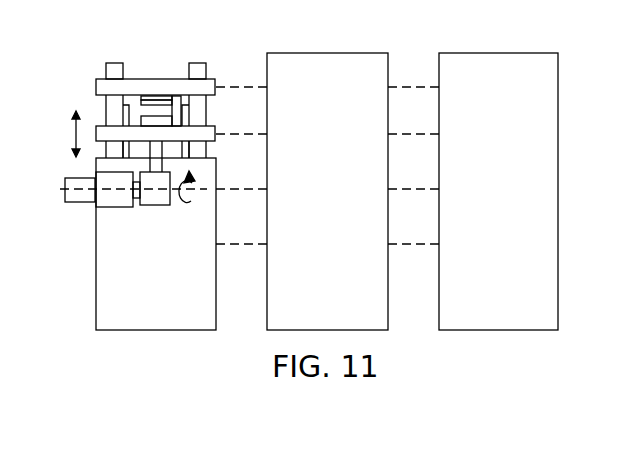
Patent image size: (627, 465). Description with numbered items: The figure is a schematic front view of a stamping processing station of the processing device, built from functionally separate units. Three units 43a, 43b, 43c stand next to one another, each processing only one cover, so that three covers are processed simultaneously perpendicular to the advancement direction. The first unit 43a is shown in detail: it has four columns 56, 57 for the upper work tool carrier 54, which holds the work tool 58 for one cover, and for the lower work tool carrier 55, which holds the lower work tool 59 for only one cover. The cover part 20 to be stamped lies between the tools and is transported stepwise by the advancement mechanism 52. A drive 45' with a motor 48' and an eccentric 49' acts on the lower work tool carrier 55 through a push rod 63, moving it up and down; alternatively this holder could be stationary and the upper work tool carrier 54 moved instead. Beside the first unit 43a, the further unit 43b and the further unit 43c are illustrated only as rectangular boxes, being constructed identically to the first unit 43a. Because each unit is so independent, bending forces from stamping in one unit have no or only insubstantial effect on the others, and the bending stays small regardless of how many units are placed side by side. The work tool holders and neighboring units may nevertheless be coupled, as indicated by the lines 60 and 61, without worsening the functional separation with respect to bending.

The first unit 43a is at (112, 293).
The further unit 43b is at (335, 68).
The further unit 43c is at (523, 67).
The lines 60 is at (239, 85).
The connection line 61 is at (411, 87).
The upper work tool carrier 54 is at (99, 87).
The lower work tool carrier 55 is at (101, 134).
The column 56 is at (112, 67).
The column 57 is at (196, 65).
The advancement mechanism 52 is at (173, 152).
The work tool 58 is at (153, 95).
The cover part 20 is at (147, 100).
The lower work tool 59 is at (165, 121).
The push rod 63 is at (150, 168).
The motor 48' is at (71, 210).
The drive 45' is at (118, 212).
The eccentric 49' is at (167, 209).